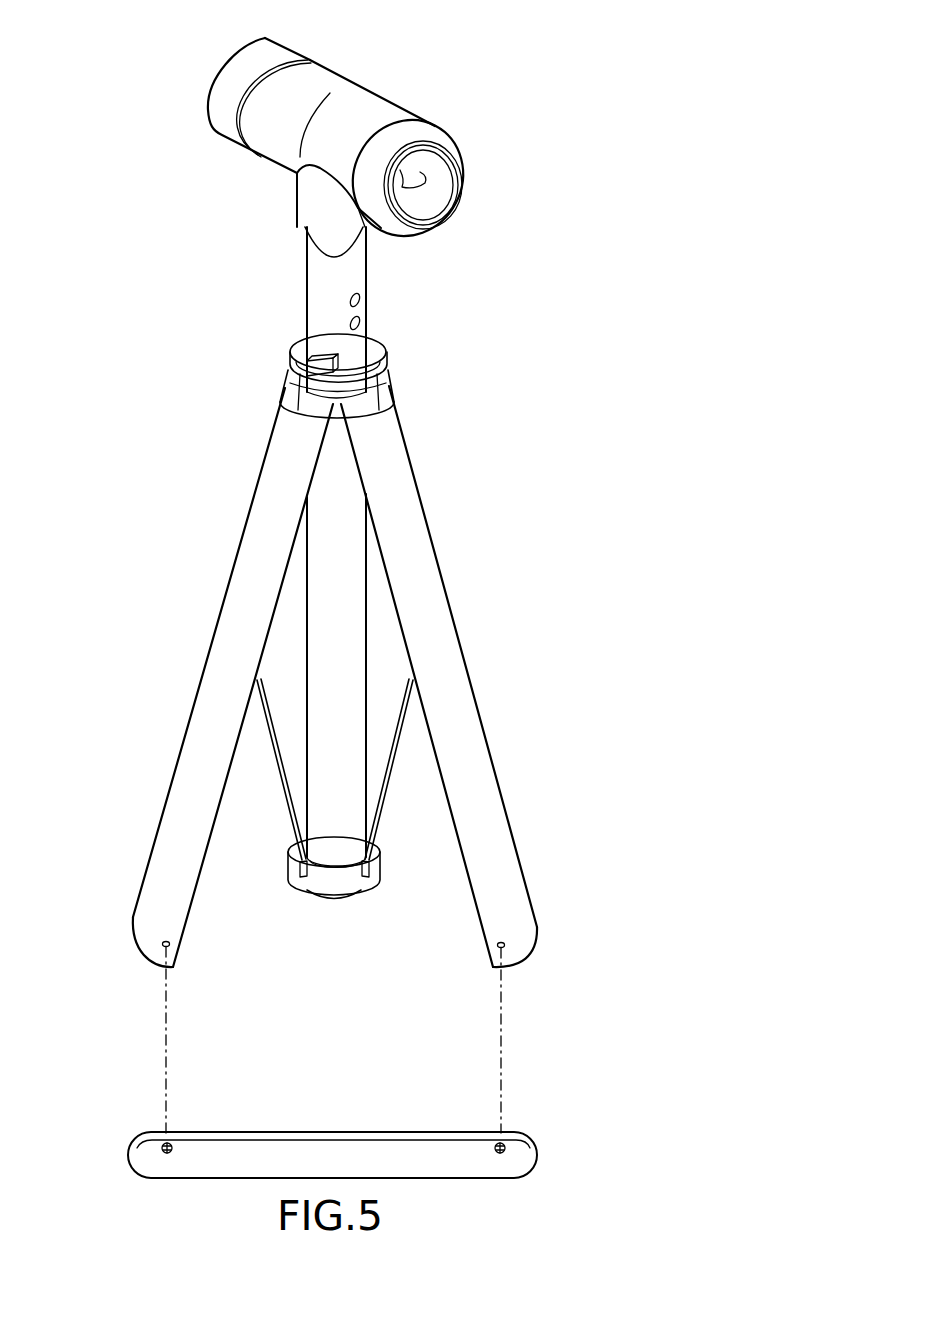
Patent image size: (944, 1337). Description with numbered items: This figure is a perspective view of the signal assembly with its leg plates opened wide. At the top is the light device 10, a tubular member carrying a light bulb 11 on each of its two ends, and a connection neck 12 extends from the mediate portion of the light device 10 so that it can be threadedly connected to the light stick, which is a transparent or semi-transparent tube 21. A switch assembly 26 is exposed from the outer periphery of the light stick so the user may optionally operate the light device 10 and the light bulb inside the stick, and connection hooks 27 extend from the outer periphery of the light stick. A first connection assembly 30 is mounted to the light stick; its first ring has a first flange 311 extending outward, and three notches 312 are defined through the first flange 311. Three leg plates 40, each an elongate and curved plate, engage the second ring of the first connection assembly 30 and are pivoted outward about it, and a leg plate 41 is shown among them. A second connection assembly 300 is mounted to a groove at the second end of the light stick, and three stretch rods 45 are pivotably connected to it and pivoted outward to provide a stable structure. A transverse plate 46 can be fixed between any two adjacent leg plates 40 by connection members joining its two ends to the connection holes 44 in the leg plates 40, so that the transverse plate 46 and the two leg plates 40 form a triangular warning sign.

The light device 10 is at (517, 85).
The light bulb 11 is at (410, 172).
The connection neck 12 is at (340, 228).
The tube 21 is at (333, 688).
The switch assembly 26 is at (368, 318).
The connection hook 27 is at (372, 373).
The first connection assembly 30 is at (404, 364).
The first flange 311 is at (297, 340).
The notch 312 is at (293, 368).
The leg plate 40 is at (235, 463).
The leg 41 is at (450, 697).
The connection hole 44 is at (515, 948).
The stretch rod 45 is at (284, 793).
The transverse plate 46 is at (153, 1147).
The second connection assembly 300 is at (305, 910).